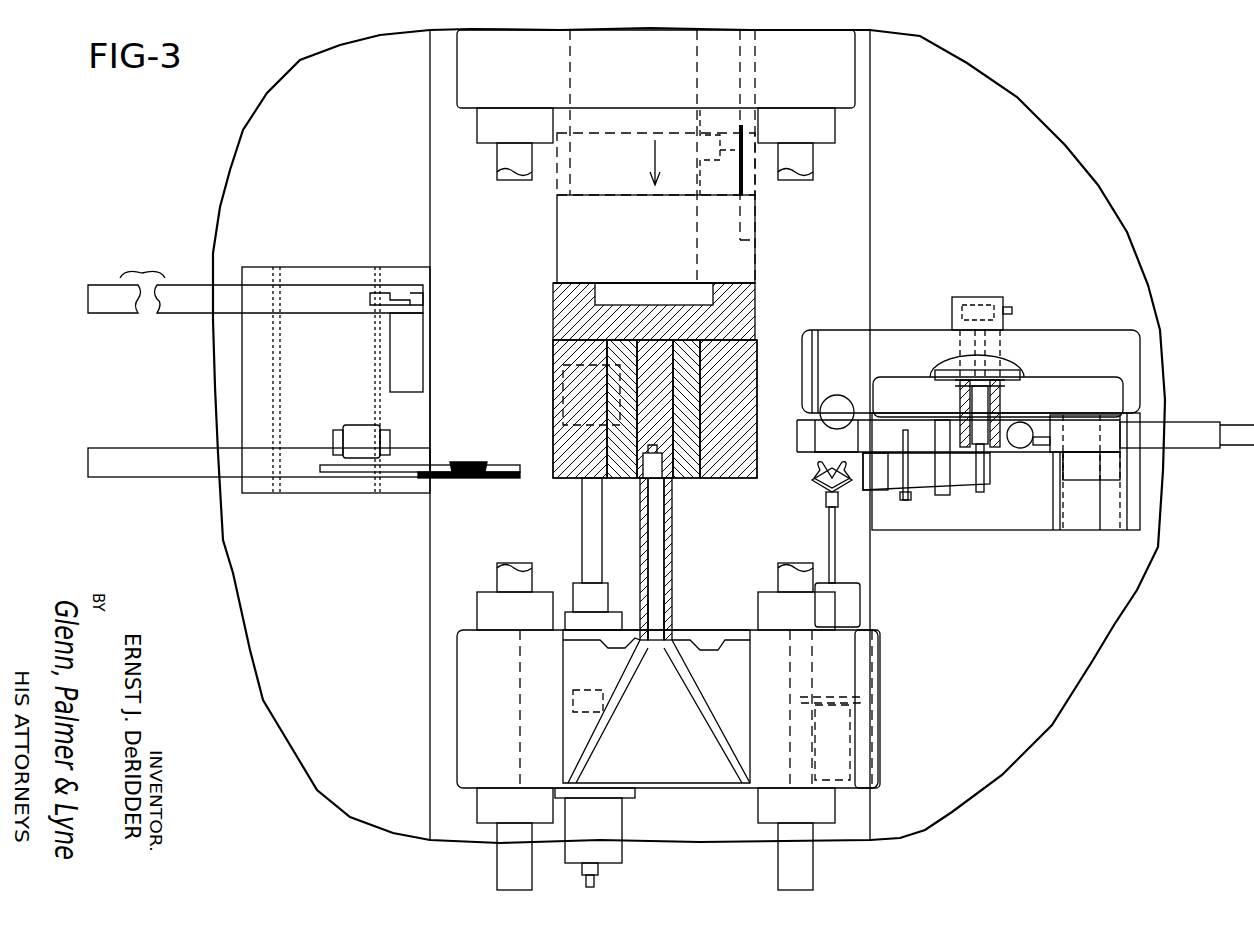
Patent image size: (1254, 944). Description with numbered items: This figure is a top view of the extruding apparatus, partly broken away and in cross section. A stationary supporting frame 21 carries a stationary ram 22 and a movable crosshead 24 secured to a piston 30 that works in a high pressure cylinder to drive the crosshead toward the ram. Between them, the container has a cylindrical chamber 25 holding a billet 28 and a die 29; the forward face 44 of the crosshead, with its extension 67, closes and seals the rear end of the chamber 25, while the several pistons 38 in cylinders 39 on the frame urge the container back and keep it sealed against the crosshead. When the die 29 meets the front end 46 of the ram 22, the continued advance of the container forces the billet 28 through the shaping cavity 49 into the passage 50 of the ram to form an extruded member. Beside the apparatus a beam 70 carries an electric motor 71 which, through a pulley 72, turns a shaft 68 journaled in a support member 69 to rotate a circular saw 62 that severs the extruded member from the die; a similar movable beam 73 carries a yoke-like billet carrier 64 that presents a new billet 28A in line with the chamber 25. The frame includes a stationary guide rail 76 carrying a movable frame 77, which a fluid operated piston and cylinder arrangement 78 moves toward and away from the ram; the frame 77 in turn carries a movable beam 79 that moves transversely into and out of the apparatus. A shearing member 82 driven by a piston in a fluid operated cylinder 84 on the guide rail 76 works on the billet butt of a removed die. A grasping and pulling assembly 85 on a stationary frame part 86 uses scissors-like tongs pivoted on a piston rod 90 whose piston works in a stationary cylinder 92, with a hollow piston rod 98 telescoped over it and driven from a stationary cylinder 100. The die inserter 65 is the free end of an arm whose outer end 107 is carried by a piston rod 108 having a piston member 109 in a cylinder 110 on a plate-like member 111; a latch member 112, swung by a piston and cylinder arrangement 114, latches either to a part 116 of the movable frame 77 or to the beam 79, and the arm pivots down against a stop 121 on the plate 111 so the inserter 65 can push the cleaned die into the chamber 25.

The stationary supporting frame 21 is at (462, 70).
The piston 30 is at (580, 170).
The movable crosshead 24 is at (566, 300).
The forward face of the crosshead 44 is at (562, 352).
The cylindrical chamber 25 is at (640, 425).
The billet 28 is at (665, 375).
The extension of the crosshead 67 is at (680, 338).
The die 29 is at (670, 458).
The shaping cavity of the die 49 is at (646, 457).
The front end of the stationary ram 46 is at (652, 480).
The stationary ram 22 is at (668, 542).
The passage of the ram 50 is at (668, 572).
The stationary part of the frame 86 is at (882, 681).
The stationary cylinder 100 is at (860, 648).
The stationary cylinder 92 is at (850, 732).
The piston 38 is at (606, 720).
The cylinder 39 is at (612, 850).
The pulley 72 is at (406, 482).
The movable beam 73 is at (290, 300).
The billet carrier 64 is at (402, 300).
The new billet 28A is at (416, 356).
The beam 70 is at (205, 455).
The electric motor 71 is at (361, 430).
The support member 69 is at (436, 468).
The shaft 68 is at (468, 474).
The circular saw 62 is at (492, 478).
The shearing member 82 is at (815, 405).
The fluid operated cylinder 84 is at (838, 398).
The guide rail 76 is at (1080, 520).
The cylinder 110 is at (956, 395).
The fluid operated piston and cylinder arrangement 78 is at (992, 289).
The piston rod 108 is at (986, 458).
The piston member 109 is at (988, 442).
The piston and cylinder arrangement 114 is at (1022, 425).
The part of the movable frame 116 is at (1042, 438).
The latch member 112 is at (1052, 430).
The movable frame 77 is at (1112, 468).
The movable beam 79 is at (1226, 424).
The outer end of the arm 107 is at (982, 490).
The die inserter 65 is at (876, 472).
The plate-like member 111 is at (941, 462).
The stop member or abutment 121 is at (904, 502).
The piston rod 90 is at (818, 478).
The grasping and pulling assembly 85 is at (800, 500).
The hollow piston rod 98 is at (830, 538).